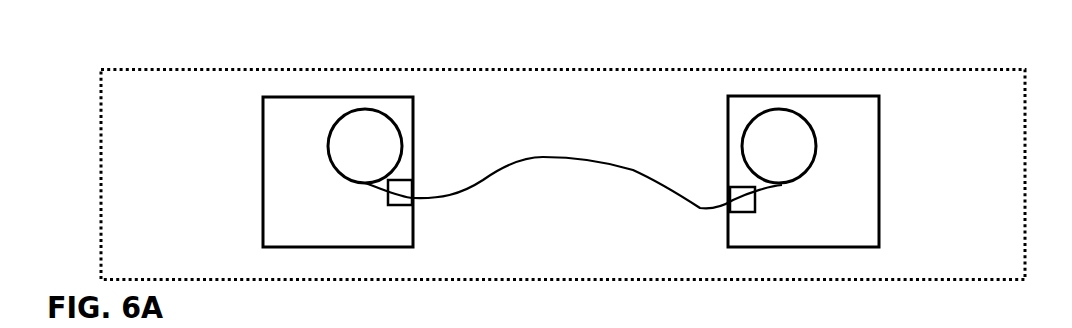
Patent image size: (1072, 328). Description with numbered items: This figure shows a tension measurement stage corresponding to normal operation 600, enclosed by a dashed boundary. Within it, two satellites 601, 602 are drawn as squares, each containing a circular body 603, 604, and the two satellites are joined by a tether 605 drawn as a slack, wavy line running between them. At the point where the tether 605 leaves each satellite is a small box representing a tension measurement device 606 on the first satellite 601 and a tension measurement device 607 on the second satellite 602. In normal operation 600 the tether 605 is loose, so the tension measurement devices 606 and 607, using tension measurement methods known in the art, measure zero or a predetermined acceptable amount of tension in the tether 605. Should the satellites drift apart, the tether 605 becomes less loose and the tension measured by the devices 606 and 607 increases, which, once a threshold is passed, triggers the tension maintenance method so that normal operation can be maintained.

The normal operation 600 is at (563, 175).
The first device 601 is at (335, 95).
The second device 602 is at (803, 95).
The first storage medium 603 is at (318, 159).
The second storage medium 604 is at (818, 163).
The tether 605 is at (547, 167).
The tension measurement device 606 is at (400, 208).
The tension measurement device 607 is at (740, 212).